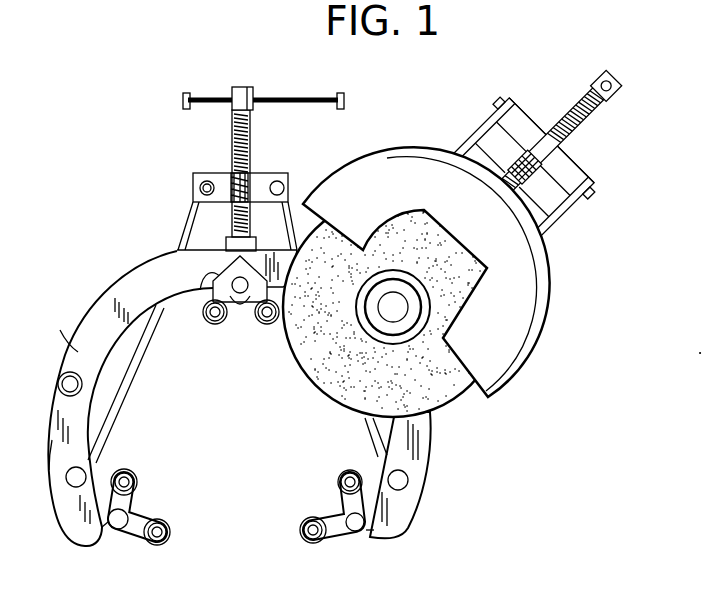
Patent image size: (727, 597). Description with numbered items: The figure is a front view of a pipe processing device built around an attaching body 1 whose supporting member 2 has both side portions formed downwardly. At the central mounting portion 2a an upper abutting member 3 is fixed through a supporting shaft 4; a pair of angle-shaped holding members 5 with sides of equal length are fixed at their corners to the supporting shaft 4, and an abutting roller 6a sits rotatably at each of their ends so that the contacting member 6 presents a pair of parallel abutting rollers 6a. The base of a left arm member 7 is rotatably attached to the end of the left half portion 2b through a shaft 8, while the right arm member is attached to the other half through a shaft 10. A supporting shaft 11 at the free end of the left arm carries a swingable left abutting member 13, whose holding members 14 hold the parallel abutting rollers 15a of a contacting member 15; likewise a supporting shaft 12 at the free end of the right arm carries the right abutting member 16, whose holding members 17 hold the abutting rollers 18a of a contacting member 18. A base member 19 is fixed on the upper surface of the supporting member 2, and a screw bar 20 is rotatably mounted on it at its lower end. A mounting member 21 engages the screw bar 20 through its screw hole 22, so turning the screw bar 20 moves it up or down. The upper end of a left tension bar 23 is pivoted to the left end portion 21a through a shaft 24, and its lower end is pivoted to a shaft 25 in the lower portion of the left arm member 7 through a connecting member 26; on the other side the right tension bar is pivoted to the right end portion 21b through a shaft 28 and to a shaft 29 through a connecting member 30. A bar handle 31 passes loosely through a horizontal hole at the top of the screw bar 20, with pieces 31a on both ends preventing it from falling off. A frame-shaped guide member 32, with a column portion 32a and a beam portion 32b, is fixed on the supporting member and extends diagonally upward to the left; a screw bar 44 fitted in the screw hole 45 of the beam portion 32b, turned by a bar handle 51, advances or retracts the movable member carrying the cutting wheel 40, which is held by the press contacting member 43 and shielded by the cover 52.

The attaching body 1 is at (191, 176).
The supporting member 2 is at (120, 285).
The mounting portion 2a is at (208, 272).
The left half portion 2b is at (78, 333).
The upper abutting member 3 is at (235, 316).
The supporting shaft 4 is at (242, 308).
The holding members 5 is at (250, 305).
The contacting member 6 is at (208, 320).
The abutting rollers 6a is at (214, 325).
The left arm member 7 is at (49, 454).
The shaft 8 is at (58, 384).
The shaft 10 is at (428, 463).
The supporting shaft 11 is at (98, 535).
The supporting shaft 12 is at (350, 533).
The left abutting member 13 is at (140, 541).
The holding members 14 is at (121, 532).
The contacting member 15 is at (165, 522).
The abutting rollers 15a is at (128, 477).
The right abutting member 16 is at (363, 540).
The holding members 17 is at (322, 542).
The contacting member 18 is at (311, 516).
The abutting rollers 18a is at (350, 475).
The base member 19 is at (226, 243).
The screw bar 20 is at (250, 130).
The mounting member 21 is at (223, 178).
The left end portion 21a is at (207, 174).
The right end portion 21b is at (290, 178).
The screw hole 22 is at (249, 174).
The left tension bar 23 is at (173, 242).
The shaft 24 is at (200, 187).
The shaft 25 is at (66, 478).
The connecting member 26 is at (92, 465).
The shaft 28 is at (292, 188).
The shaft 29 is at (408, 484).
The connecting member 30 is at (378, 450).
The bar handle 31 is at (268, 97).
The pieces for preventing falling-off 31a is at (186, 96).
The guide member 32 is at (556, 222).
The column portion 32a is at (464, 142).
The beam portion 32b is at (578, 172).
The cutting wheel 40 is at (460, 398).
The press contacting member 43 is at (427, 302).
The screw bar 44 is at (585, 120).
The screw hole 45 is at (548, 130).
The bar handle 51 is at (622, 78).
The cover 52 is at (532, 338).